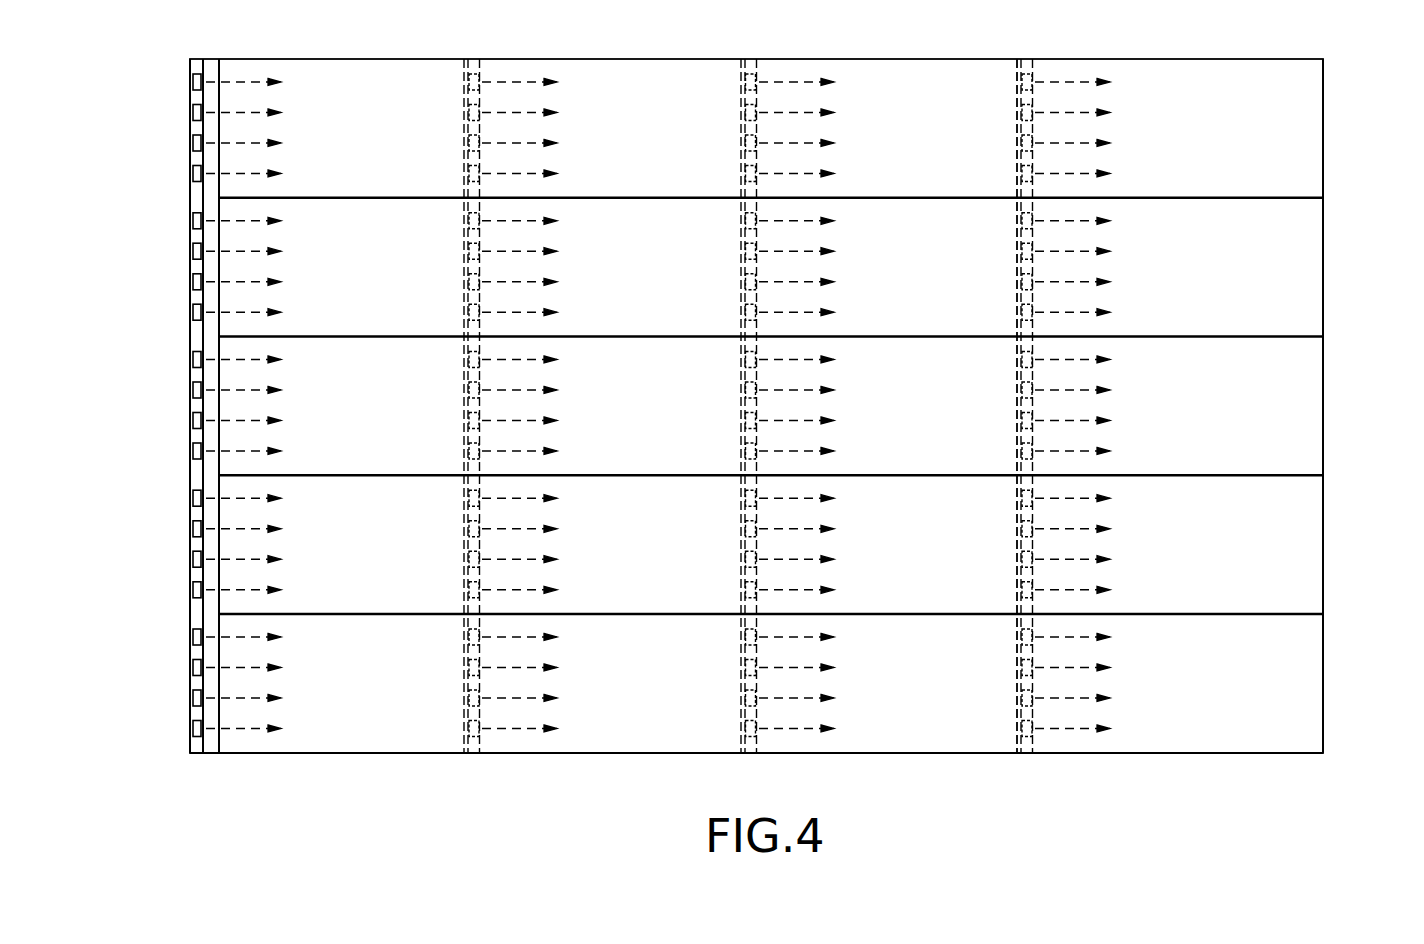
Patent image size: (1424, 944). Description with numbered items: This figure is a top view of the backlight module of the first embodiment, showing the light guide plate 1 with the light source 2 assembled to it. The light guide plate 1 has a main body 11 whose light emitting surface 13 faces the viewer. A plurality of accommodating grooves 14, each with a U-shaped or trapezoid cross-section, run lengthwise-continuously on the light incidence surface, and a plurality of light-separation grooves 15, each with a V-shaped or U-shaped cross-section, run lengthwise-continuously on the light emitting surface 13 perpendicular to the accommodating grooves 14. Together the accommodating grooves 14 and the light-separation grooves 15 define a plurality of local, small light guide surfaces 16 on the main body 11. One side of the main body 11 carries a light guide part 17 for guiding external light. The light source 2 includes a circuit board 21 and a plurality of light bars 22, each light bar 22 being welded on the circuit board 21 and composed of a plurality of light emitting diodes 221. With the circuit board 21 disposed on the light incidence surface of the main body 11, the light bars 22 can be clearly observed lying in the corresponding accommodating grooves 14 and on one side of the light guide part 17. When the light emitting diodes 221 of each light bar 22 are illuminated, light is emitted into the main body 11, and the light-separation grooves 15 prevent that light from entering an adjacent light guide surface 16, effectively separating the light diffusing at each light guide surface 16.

The light guide plate 1 is at (1337, 697).
The main body 11 is at (1325, 405).
The light emitting surface 13 is at (1232, 740).
The accommodating groove 14 is at (1018, 717).
The light-separation groove 15 is at (1272, 613).
The light guide surface 16 is at (340, 693).
The light guide part 17 is at (208, 545).
The light source 2 is at (186, 618).
The circuit board 21 is at (197, 612).
The light bar 22 is at (197, 742).
The light emitting diode 221 is at (198, 702).